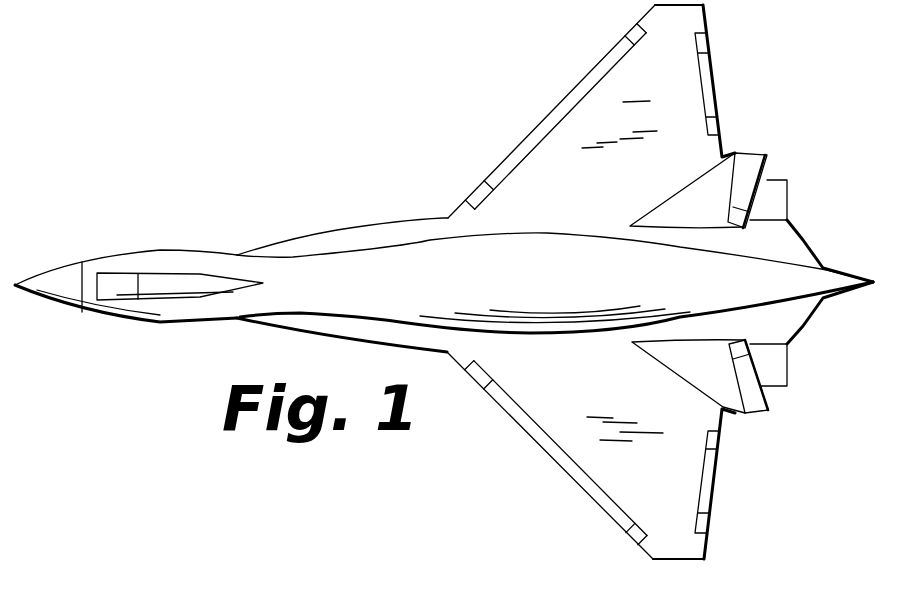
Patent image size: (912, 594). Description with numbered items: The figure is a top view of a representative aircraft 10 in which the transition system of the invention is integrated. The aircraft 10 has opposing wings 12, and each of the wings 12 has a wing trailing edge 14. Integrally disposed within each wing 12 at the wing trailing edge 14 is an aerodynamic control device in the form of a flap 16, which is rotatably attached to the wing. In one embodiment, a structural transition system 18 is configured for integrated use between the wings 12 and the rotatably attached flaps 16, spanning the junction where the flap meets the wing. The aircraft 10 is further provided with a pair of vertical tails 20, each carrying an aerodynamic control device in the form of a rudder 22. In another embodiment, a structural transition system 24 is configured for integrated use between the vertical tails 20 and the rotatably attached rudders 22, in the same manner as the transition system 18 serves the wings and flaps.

The aircraft 10 is at (515, 293).
The wings 12 is at (656, 105).
The wing trailing edges 14 is at (725, 146).
The flaps 16 is at (713, 93).
The structural transition system 18 is at (738, 38).
The vertical tails 20 is at (677, 200).
The rudder 22 is at (752, 191).
The structural transition system 24 is at (758, 221).